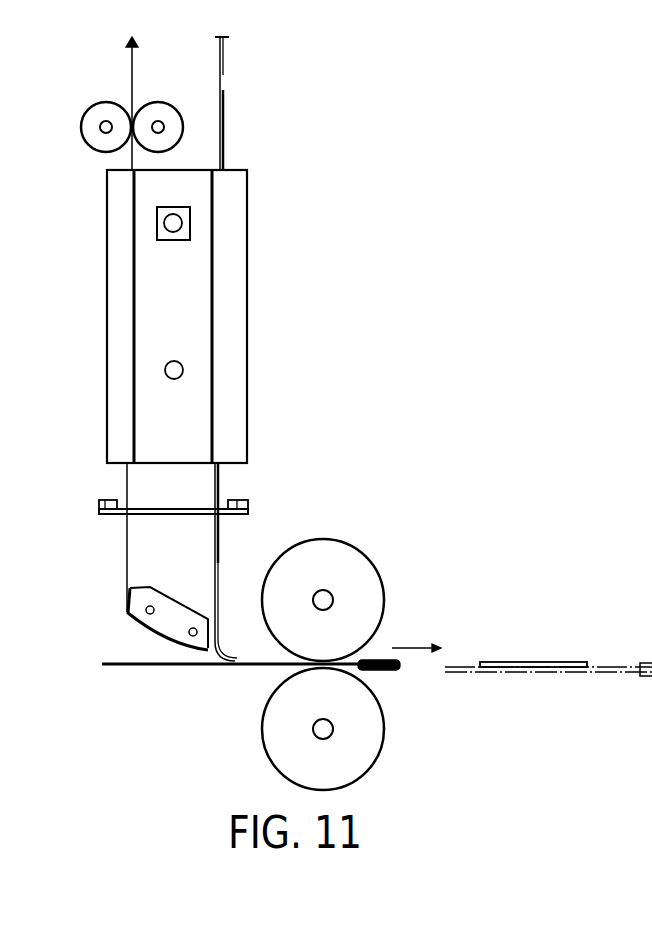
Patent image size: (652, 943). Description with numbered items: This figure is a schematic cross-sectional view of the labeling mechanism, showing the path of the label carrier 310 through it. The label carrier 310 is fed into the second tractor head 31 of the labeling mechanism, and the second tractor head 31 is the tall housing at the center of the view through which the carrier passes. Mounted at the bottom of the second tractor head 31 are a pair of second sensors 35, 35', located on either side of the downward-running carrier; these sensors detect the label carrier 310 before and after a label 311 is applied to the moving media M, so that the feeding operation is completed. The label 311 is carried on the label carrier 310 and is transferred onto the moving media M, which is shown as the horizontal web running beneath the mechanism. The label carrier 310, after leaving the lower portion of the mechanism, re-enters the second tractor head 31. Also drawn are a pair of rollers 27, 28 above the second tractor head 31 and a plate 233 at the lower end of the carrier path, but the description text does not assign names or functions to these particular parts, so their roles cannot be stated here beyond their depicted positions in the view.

The pressure roller 28 is at (93, 110).
The feed roller 27 is at (158, 110).
The label carrier 310 is at (222, 62).
The label 311 is at (223, 138).
The second tractor head 31 is at (240, 298).
The second sensor 35 is at (138, 493).
The second sensor 35' is at (277, 491).
The peeling plate 233 is at (172, 607).
The moving media M is at (182, 668).